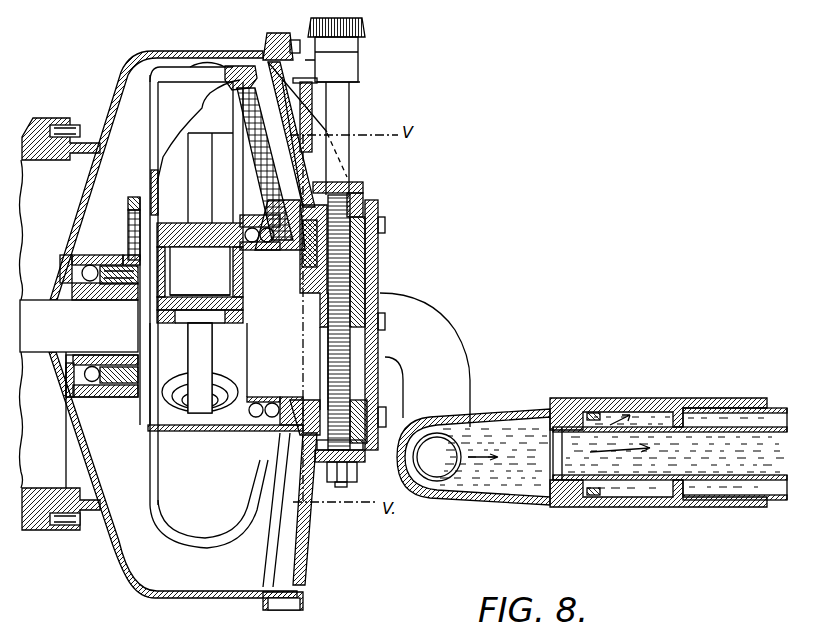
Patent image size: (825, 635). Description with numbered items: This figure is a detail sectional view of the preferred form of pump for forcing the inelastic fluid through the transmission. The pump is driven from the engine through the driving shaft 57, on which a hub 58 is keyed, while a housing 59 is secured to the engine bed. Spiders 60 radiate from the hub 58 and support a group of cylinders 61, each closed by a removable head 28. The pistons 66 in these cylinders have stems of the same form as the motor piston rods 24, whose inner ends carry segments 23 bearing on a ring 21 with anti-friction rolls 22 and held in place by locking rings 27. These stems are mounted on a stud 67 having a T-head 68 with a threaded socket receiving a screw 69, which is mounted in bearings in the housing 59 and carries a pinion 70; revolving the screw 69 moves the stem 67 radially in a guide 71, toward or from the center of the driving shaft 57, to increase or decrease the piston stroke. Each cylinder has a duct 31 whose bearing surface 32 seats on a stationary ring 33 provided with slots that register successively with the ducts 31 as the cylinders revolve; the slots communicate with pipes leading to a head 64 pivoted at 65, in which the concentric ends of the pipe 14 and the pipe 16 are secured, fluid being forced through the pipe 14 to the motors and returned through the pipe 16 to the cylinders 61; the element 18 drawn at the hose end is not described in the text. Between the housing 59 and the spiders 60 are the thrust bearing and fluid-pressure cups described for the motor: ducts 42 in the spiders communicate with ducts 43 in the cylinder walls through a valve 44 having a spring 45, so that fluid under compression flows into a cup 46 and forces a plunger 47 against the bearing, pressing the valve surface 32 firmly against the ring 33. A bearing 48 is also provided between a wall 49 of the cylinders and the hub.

The pipe 14 is at (660, 427).
The pipe 16 is at (720, 407).
The hose coupling 18 is at (722, 507).
The ring 21 is at (206, 313).
The anti-friction rolls 22 is at (213, 330).
The segments 23 is at (227, 228).
The piston rods 24 is at (198, 165).
The locking rings 27 is at (160, 322).
The removable head 28 is at (240, 72).
The duct 31 is at (270, 133).
The bearing surface 32 is at (313, 450).
The stationary ring 33 is at (350, 202).
The ducts 42 is at (128, 247).
The ducts 43 is at (155, 180).
The valve 44 is at (133, 202).
The spring 45 is at (128, 237).
The cup 46 is at (83, 263).
The plunger 47 is at (87, 278).
The bearing 48 is at (330, 195).
The wall 49 is at (223, 428).
The driving shaft 57 is at (79, 326).
The hub 58 is at (83, 362).
The housing 59 is at (115, 555).
The spiders 60 is at (107, 257).
The cylinders 61 is at (160, 113).
The head 64 is at (613, 400).
The pivot 65 is at (437, 485).
The pistons 66 is at (208, 127).
The stud 67 is at (378, 268).
The T-head 68 is at (378, 257).
The screw 69 is at (382, 225).
The pinion 70 is at (363, 28).
The guide 71 is at (378, 288).